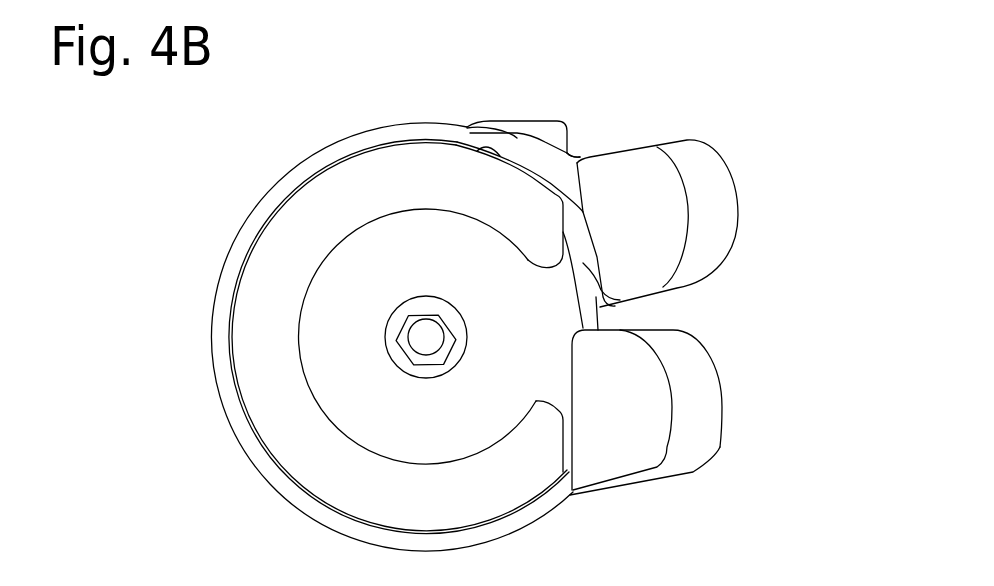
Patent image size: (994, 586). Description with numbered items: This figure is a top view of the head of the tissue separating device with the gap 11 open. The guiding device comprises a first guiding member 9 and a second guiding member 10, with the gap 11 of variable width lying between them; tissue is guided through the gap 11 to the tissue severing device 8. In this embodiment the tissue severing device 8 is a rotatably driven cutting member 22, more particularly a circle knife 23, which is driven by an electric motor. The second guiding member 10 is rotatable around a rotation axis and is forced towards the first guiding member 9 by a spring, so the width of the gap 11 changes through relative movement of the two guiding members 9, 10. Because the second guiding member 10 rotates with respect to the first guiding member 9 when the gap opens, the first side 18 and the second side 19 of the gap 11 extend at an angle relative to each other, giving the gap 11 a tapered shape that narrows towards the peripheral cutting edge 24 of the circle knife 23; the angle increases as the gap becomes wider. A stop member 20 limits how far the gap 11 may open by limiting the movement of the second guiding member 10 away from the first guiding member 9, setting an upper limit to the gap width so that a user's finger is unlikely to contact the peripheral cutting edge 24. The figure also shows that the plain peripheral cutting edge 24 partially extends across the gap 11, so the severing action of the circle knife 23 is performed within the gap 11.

The tissue severing device 8 is at (462, 438).
The first guiding member 9 is at (678, 400).
The second guiding member 10 is at (712, 215).
The gap 11 is at (700, 298).
The first side 18 is at (619, 332).
The second side 19 is at (657, 293).
The stop member 20 is at (550, 127).
The rotatably driven cutting member 22 is at (320, 333).
The circle knife 23 is at (345, 408).
The peripheral cutting edge 24 is at (582, 270).